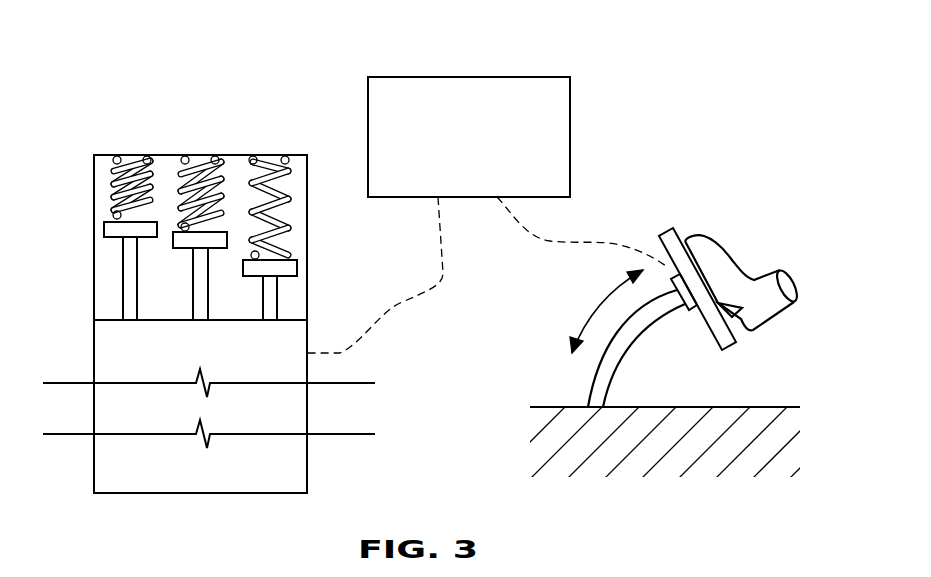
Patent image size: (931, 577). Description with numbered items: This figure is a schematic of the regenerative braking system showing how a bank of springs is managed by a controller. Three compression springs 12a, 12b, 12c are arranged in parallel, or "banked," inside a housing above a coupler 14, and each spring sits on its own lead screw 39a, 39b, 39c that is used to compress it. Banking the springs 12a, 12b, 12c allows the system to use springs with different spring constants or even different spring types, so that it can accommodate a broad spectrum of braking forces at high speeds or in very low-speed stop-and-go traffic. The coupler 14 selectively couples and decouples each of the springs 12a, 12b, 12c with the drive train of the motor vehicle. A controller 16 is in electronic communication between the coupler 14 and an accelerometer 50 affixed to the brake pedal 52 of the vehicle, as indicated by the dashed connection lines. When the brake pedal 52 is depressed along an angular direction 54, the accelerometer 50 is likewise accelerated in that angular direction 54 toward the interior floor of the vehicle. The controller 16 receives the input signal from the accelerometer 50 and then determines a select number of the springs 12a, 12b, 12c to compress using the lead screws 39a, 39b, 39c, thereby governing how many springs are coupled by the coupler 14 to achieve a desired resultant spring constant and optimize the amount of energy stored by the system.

The compression spring 12a is at (117, 157).
The compression spring 12b is at (187, 157).
The compression spring 12c is at (257, 157).
The lead screw 39a is at (127, 252).
The lead screw 39b is at (200, 294).
The lead screw 39c is at (272, 295).
The coupler 14 is at (283, 464).
The controller 16 is at (403, 77).
The accelerometer 50 is at (687, 313).
The brake pedal 52 is at (667, 228).
The angular direction 54 is at (602, 308).